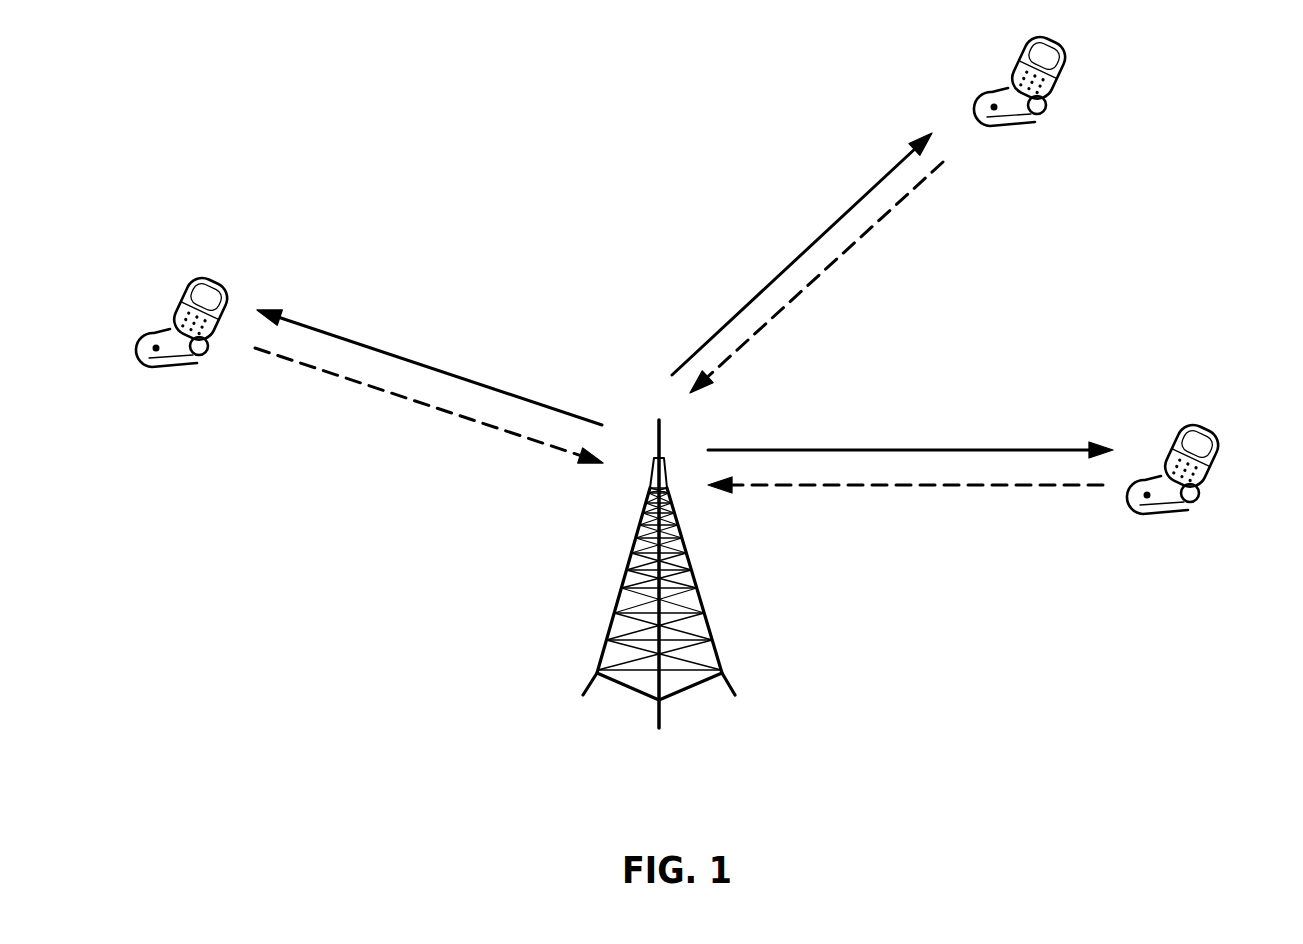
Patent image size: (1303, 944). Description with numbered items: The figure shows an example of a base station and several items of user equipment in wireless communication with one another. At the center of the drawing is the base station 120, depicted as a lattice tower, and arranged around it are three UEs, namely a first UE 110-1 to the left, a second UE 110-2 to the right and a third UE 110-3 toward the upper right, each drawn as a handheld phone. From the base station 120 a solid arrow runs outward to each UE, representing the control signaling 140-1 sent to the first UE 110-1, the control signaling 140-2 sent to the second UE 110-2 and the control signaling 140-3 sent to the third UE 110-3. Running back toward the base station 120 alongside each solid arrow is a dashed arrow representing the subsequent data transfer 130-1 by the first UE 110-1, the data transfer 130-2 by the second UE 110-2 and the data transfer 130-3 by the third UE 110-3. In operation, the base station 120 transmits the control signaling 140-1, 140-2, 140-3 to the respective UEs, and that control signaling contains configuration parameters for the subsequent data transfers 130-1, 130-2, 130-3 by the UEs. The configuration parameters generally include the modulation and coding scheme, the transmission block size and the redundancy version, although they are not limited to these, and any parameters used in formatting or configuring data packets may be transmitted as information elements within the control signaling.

The user equipment 110-1 is at (192, 365).
The user equipment 110-2 is at (1182, 512).
The user equipment 110-3 is at (1032, 123).
The base station 120 is at (720, 652).
The data transfer 130-1 is at (473, 420).
The data transfer 130-2 is at (873, 487).
The data transfer 130-3 is at (845, 252).
The control signaling 140-1 is at (363, 342).
The control signaling 140-2 is at (1022, 448).
The control signaling 140-3 is at (848, 203).